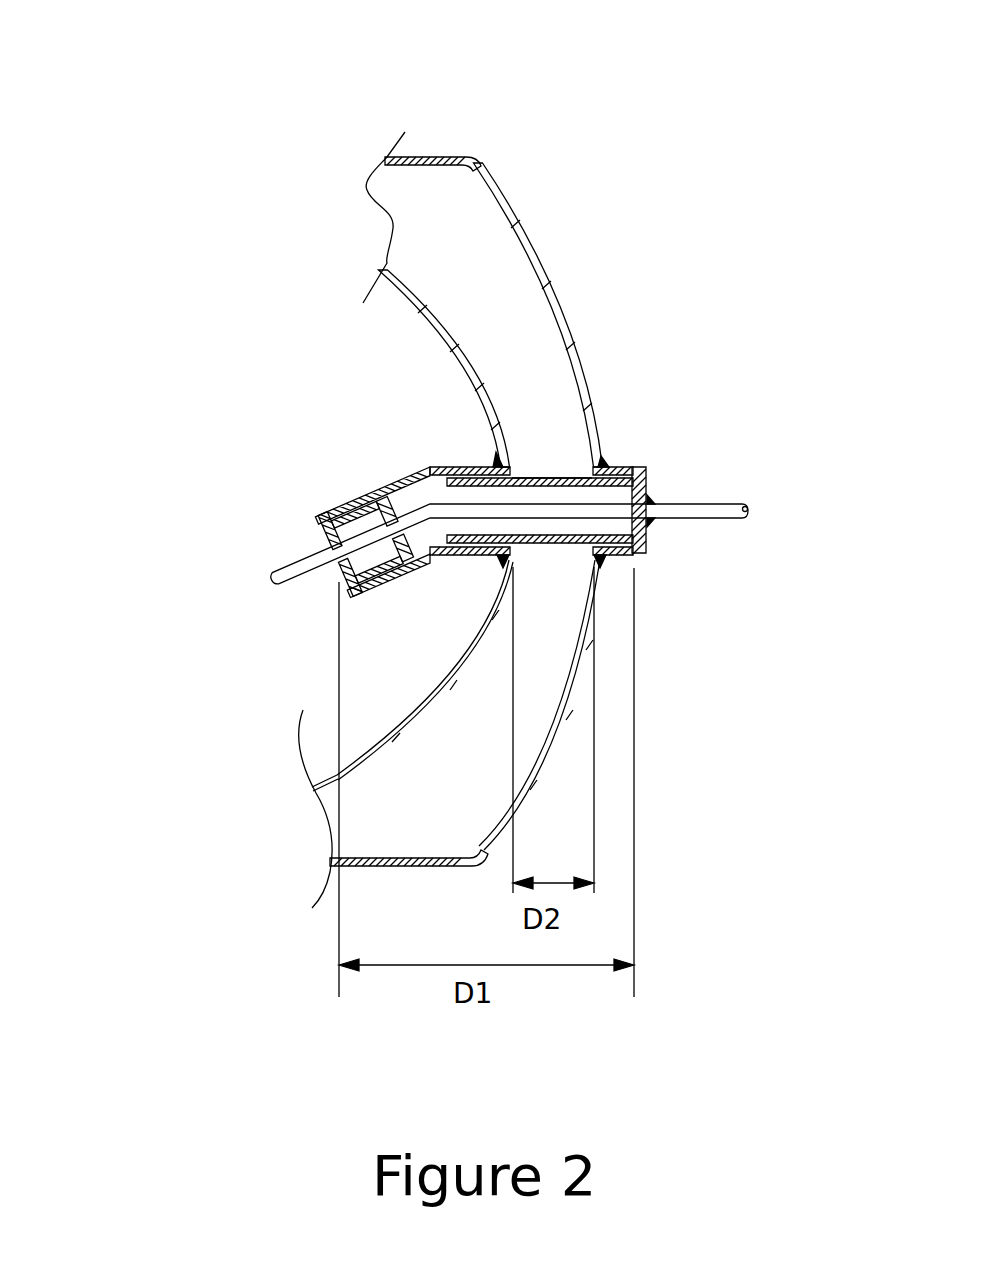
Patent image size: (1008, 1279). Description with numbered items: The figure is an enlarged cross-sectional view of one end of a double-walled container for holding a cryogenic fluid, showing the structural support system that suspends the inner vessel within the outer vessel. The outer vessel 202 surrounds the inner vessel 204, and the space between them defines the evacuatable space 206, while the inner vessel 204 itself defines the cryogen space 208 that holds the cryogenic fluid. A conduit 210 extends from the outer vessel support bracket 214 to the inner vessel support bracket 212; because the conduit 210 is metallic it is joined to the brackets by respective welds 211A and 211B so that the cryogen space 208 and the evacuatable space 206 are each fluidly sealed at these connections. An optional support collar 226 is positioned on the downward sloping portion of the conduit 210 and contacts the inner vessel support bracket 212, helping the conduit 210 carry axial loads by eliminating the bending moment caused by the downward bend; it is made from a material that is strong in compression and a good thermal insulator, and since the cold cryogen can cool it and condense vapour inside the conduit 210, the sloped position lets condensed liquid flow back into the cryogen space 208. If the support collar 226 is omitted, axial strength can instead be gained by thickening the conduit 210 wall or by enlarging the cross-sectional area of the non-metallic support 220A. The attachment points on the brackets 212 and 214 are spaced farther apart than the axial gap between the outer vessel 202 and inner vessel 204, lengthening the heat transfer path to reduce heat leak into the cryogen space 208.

The outer vessel 202 is at (453, 155).
The inner vessel 204 is at (388, 270).
The evacuatable space 206 is at (462, 257).
The cryogen space 208 is at (408, 422).
The conduit 210 is at (688, 512).
The weld 211A is at (317, 543).
The weld 211B is at (650, 498).
The inner vessel support bracket 212 is at (460, 477).
The outer vessel support bracket 214 is at (634, 467).
The non-metallic support 220A is at (540, 477).
The support collar 226 is at (402, 480).